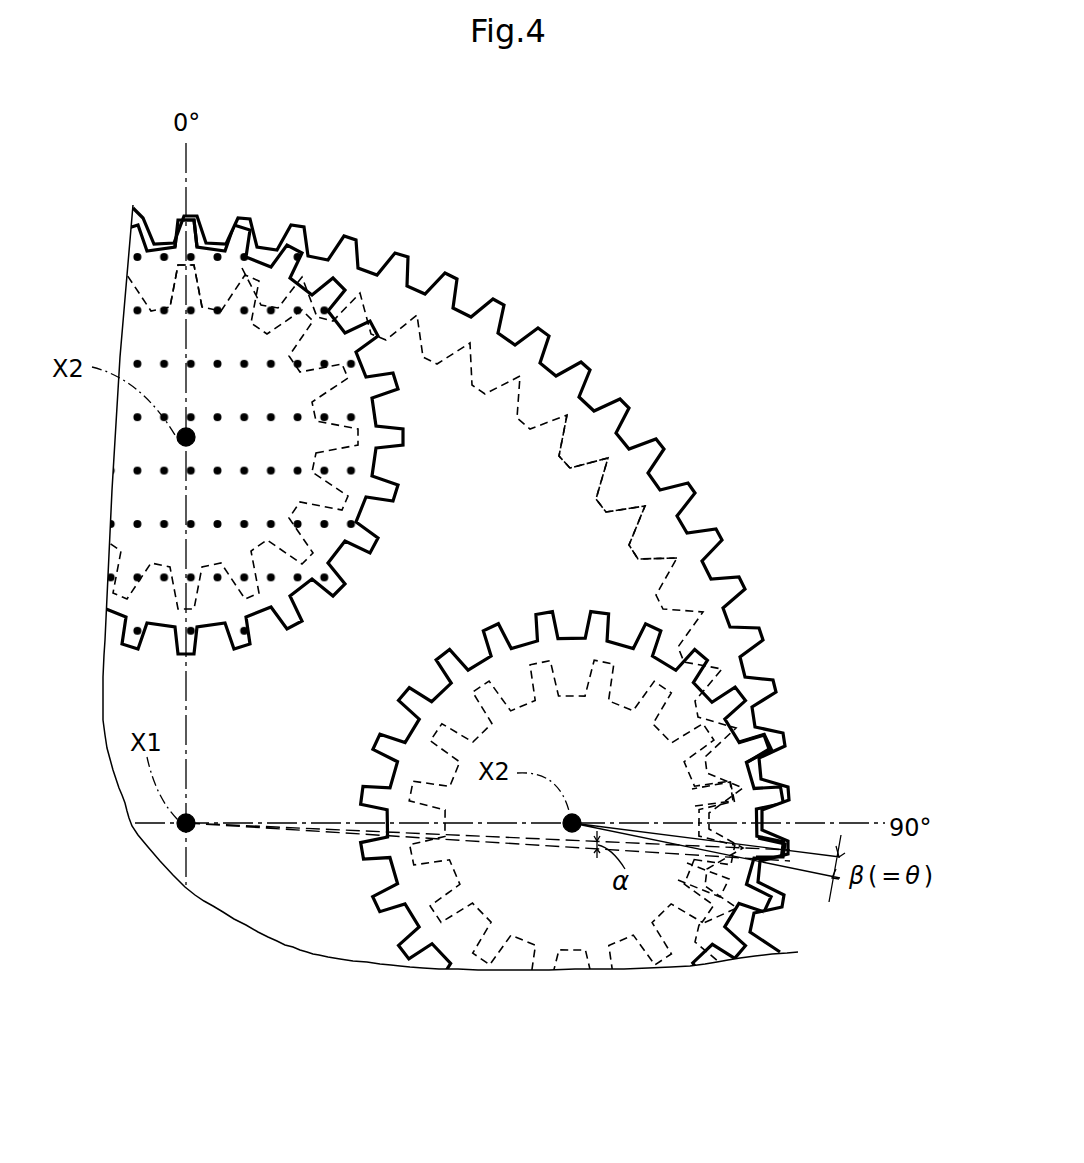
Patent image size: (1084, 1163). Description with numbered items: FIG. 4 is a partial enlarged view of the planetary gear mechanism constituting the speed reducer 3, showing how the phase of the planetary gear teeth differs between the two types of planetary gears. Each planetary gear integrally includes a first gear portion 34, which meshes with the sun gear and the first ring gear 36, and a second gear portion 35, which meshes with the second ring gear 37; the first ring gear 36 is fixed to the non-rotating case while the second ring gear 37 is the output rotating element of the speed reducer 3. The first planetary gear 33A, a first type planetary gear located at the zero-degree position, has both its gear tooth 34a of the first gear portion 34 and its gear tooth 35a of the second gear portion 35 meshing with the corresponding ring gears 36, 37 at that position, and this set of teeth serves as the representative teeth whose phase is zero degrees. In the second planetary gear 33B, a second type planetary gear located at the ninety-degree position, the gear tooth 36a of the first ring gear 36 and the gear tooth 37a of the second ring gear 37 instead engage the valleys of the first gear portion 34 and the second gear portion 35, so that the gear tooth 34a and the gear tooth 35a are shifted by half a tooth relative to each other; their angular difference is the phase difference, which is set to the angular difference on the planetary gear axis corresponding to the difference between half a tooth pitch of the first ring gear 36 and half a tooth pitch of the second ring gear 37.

The speed reducer 3 is at (777, 237).
The first planetary gear 33A is at (325, 437).
The second planetary gear 33B is at (600, 595).
The first gear portion 34 is at (378, 548).
The second gear portion 35 is at (350, 488).
The first ring gear 36 is at (590, 402).
The second ring gear 37 is at (607, 505).
The gear tooth of the first gear portion 34a is at (192, 240).
The gear tooth of the second gear portion 35a is at (195, 290).
The gear tooth of the first ring gear 36a is at (767, 720).
The gear tooth of the second ring gear 37a is at (747, 772).